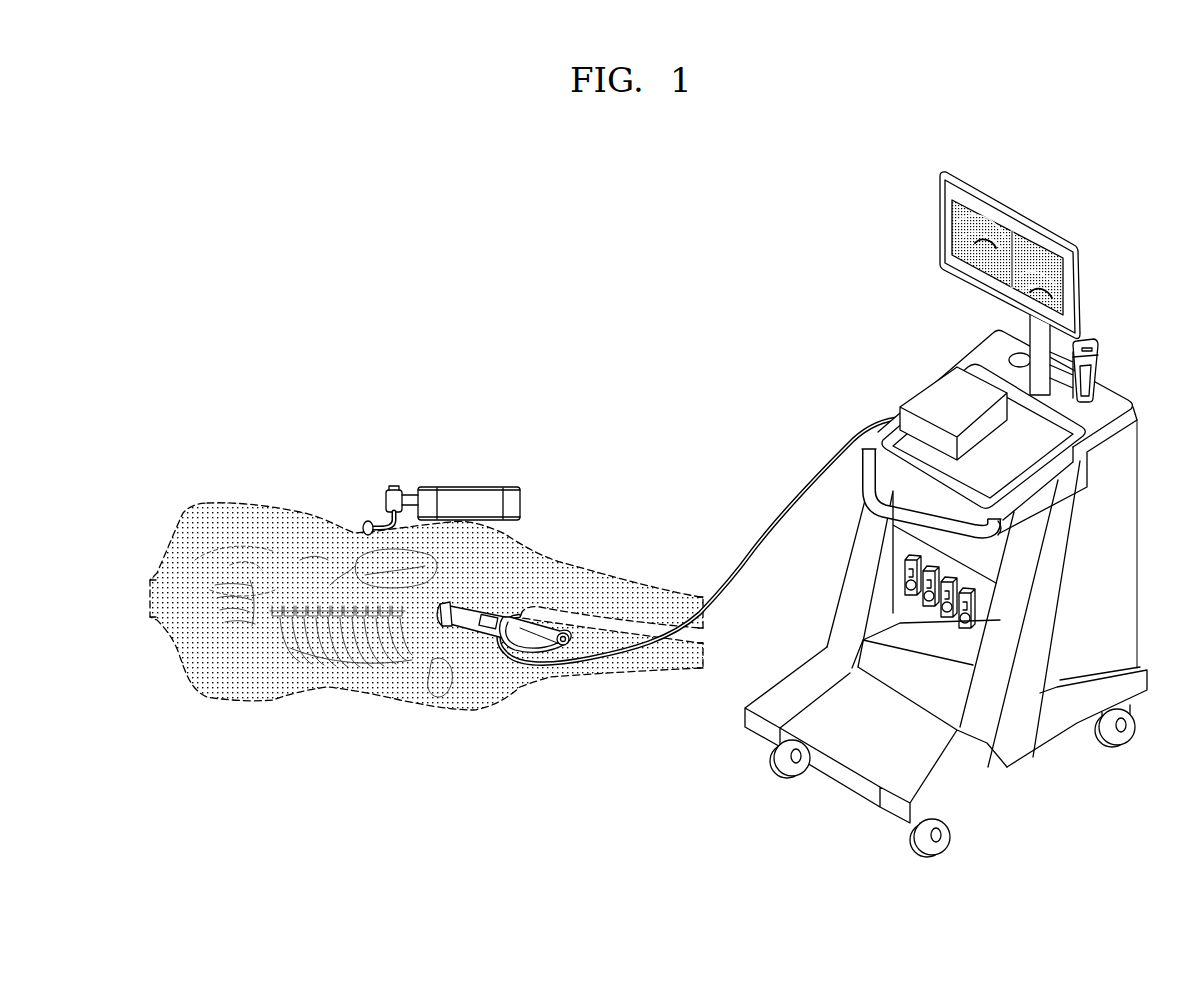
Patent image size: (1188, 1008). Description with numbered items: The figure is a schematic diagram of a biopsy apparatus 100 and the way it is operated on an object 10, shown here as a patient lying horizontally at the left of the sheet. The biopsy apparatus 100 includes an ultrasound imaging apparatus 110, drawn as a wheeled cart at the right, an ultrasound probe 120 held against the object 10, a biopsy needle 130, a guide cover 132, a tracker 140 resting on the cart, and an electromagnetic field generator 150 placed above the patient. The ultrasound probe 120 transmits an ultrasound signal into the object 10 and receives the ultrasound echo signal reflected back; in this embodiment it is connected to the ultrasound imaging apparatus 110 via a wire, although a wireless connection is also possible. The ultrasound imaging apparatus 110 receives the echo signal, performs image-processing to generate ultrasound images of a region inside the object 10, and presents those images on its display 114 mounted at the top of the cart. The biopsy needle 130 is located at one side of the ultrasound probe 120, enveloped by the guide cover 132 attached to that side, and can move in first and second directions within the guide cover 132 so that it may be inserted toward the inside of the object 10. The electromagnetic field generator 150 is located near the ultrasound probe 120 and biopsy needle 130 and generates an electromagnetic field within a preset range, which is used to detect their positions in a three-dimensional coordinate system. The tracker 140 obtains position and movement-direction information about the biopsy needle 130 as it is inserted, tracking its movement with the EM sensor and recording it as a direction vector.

The object 10 is at (255, 520).
The biopsy apparatus 100 is at (614, 588).
The ultrasound imaging apparatus 110 is at (952, 514).
The display 114 is at (955, 218).
The ultrasound probe 120 is at (540, 645).
The biopsy needle 130 is at (527, 622).
The guide cover 132 is at (517, 613).
The tracker 140 is at (940, 393).
The electromagnetic field generator 150 is at (471, 497).